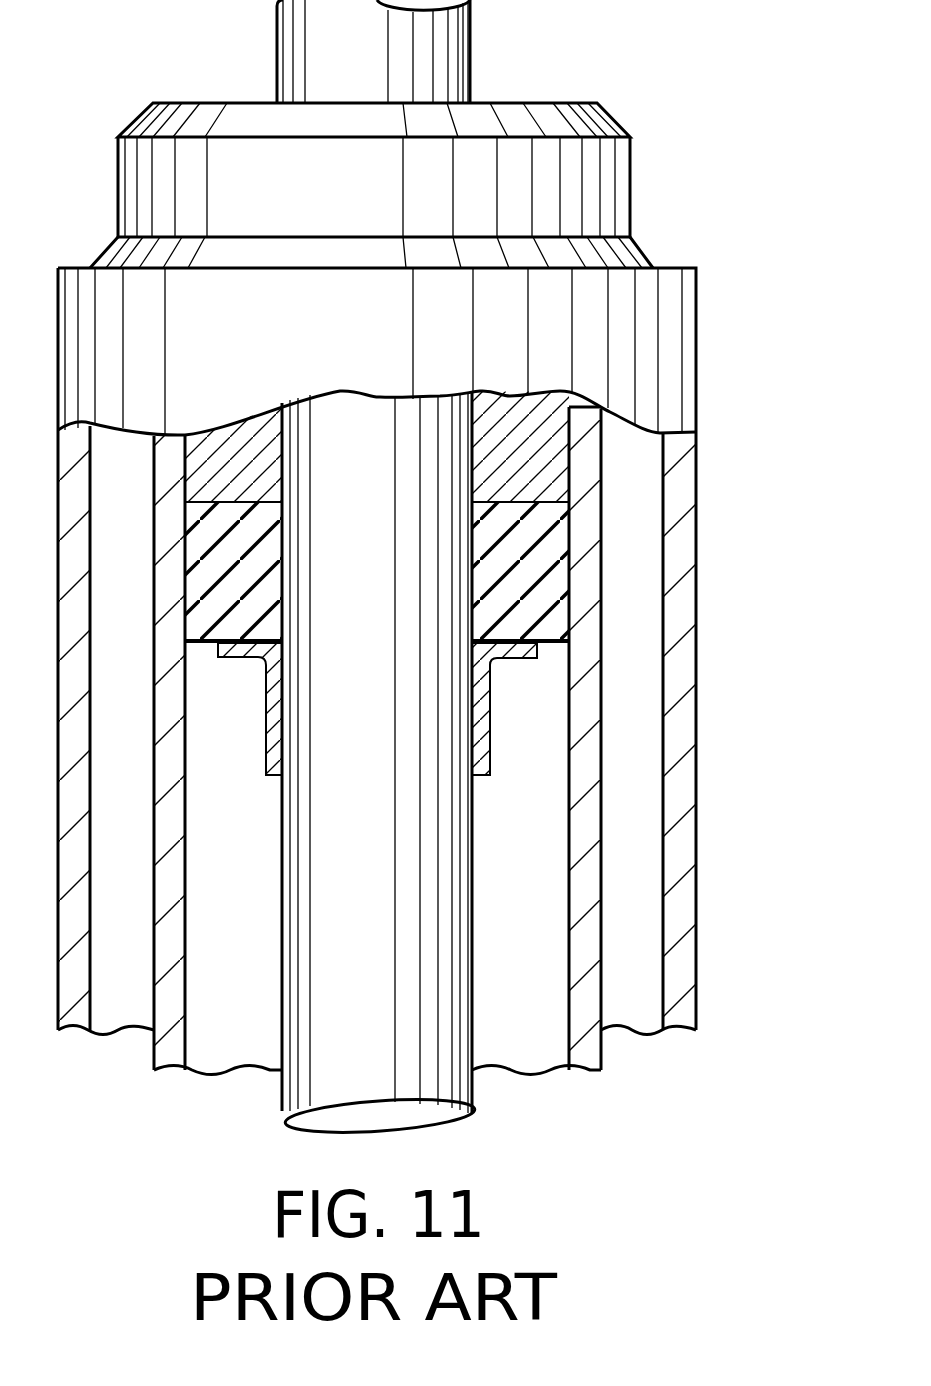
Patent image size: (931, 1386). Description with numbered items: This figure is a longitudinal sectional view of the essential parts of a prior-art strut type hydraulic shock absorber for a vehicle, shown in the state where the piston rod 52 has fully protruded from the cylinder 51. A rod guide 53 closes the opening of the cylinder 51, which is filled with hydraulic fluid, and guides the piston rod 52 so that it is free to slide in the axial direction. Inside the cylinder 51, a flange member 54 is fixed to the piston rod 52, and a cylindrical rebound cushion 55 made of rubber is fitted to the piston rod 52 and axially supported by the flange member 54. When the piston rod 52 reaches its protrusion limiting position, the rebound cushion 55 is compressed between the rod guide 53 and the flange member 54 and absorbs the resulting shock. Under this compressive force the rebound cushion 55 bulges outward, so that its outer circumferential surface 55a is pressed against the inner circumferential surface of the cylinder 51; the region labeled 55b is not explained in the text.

The cylinder 51 is at (588, 787).
The piston rod 52 is at (455, 848).
The rod guide 53 is at (557, 477).
The flange member 54 is at (493, 710).
The rebound cushion 55 is at (560, 553).
The outer circumferential surface 55a is at (572, 603).
The upper portion of seal 55b is at (470, 537).